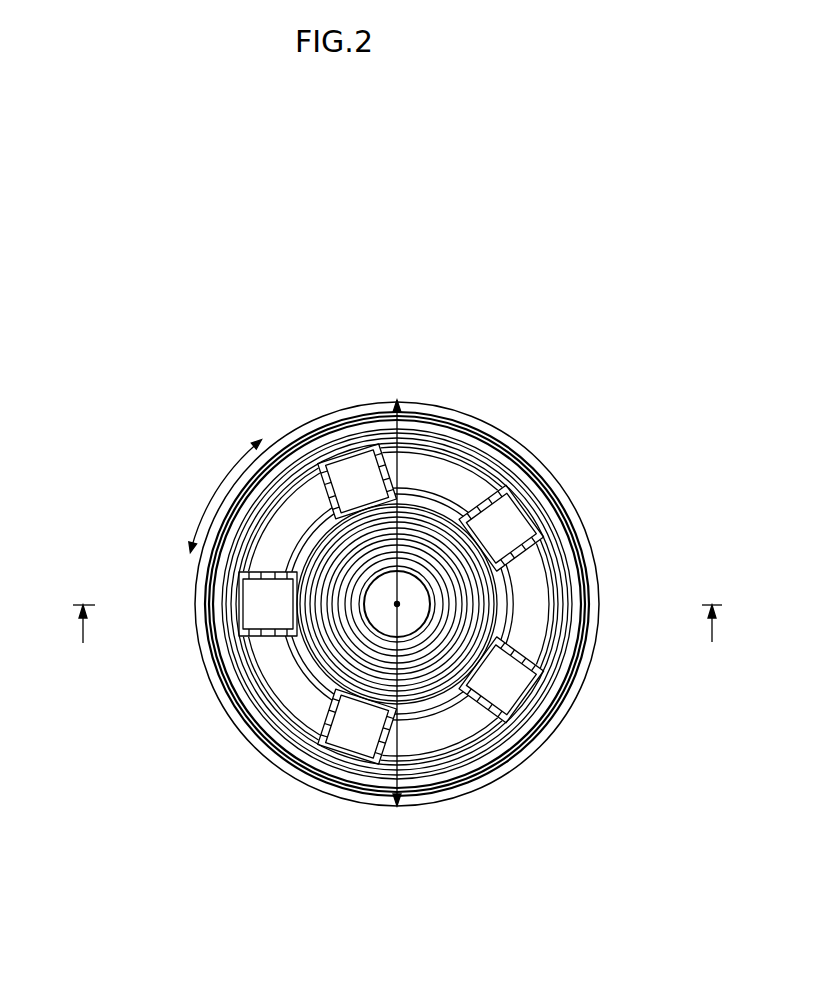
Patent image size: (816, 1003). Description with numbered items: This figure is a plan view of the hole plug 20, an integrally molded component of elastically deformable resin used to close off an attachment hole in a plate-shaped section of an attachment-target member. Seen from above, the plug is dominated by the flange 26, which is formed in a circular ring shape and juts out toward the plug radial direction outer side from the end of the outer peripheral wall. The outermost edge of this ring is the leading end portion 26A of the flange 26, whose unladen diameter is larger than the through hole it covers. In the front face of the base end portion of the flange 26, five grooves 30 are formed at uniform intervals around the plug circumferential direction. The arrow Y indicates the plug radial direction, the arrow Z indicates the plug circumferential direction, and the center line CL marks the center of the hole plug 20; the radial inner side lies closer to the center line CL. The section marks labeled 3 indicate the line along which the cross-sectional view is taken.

The hole plug 20 is at (443, 589).
The flange 26 is at (443, 604).
The leading end portion of the flange 26A is at (595, 645).
The grooves 30 is at (505, 525).
The arrow Y is at (403, 460).
The arrow Z is at (215, 492).
The center line CL is at (397, 604).
The section line 3 is at (396, 616).